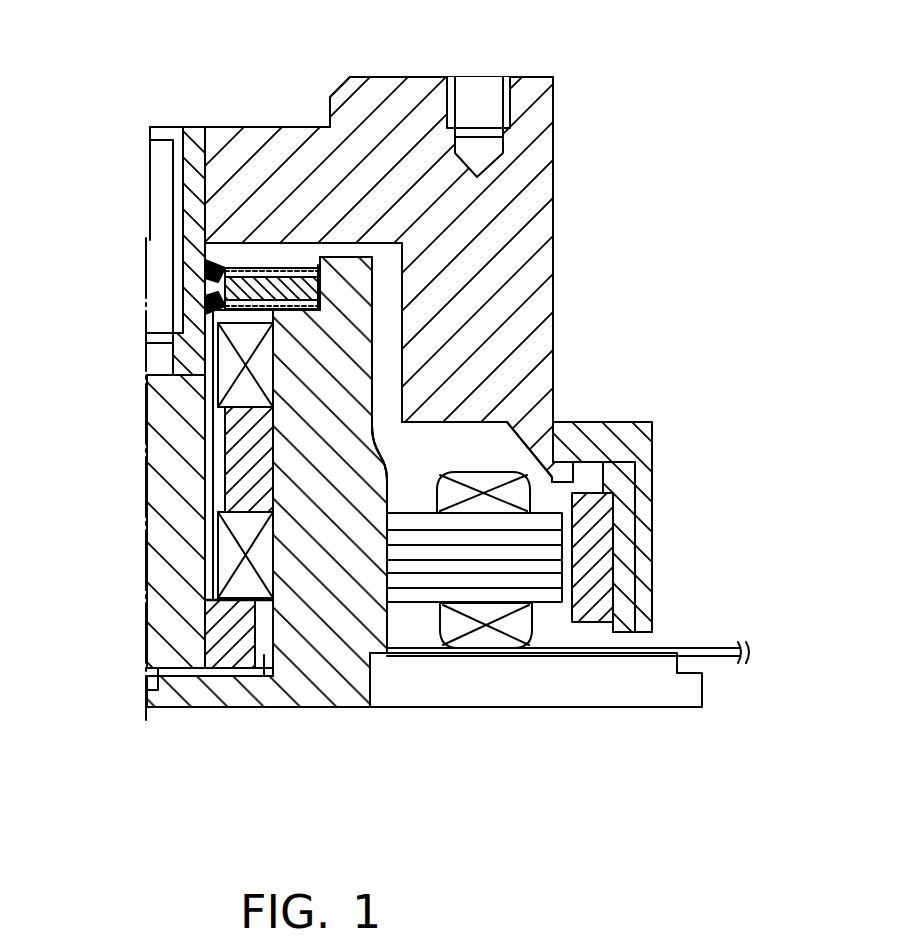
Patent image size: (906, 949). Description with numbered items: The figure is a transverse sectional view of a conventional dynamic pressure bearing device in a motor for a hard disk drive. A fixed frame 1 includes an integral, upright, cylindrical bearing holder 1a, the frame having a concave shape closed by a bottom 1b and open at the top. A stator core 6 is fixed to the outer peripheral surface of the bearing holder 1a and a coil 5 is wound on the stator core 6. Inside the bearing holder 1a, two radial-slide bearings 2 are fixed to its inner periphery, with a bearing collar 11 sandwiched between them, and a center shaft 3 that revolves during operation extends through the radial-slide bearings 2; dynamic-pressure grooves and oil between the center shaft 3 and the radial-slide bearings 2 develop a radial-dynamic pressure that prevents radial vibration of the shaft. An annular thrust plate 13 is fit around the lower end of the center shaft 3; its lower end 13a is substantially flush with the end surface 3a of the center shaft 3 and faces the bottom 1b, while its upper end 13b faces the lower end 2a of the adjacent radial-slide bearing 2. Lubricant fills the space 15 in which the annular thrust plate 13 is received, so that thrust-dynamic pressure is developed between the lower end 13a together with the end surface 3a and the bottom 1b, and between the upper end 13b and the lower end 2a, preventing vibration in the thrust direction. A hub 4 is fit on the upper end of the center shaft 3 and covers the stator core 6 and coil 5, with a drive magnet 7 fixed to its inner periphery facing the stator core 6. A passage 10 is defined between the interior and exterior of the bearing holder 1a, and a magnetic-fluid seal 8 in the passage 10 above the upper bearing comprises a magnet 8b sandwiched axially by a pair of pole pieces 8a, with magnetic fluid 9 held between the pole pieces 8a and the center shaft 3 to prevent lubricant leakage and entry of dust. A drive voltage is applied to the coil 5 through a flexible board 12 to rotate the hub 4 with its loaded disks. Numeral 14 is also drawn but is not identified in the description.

The frame 1 is at (350, 686).
The bearing holder 1a is at (360, 497).
The bottom of the frame 1b is at (175, 692).
The radial-slide bearings 2 is at (227, 378).
The lower end of the radial-slide bearing 2a is at (205, 640).
The center shaft 3 is at (165, 492).
The end surface of the center shaft 3a is at (148, 706).
The hub 4 is at (372, 97).
The coil 5 is at (517, 612).
The stator core 6 is at (428, 595).
The drive magnet 7 is at (597, 540).
The magnetic-fluid seal 8 is at (257, 258).
The pole pieces 8a is at (303, 262).
The magnet 8b is at (240, 287).
The magnetic fluid 9 is at (215, 268).
The passage 10 is at (372, 250).
The bearing collar 11 is at (212, 505).
The flexible board 12 is at (697, 648).
The annular thrust plate 13 is at (222, 655).
The lower end of the annular thrust plate 13a is at (258, 660).
The upper end of the annular thrust plate 13b is at (305, 665).
The spacer 14 is at (240, 478).
The space 15 is at (266, 655).